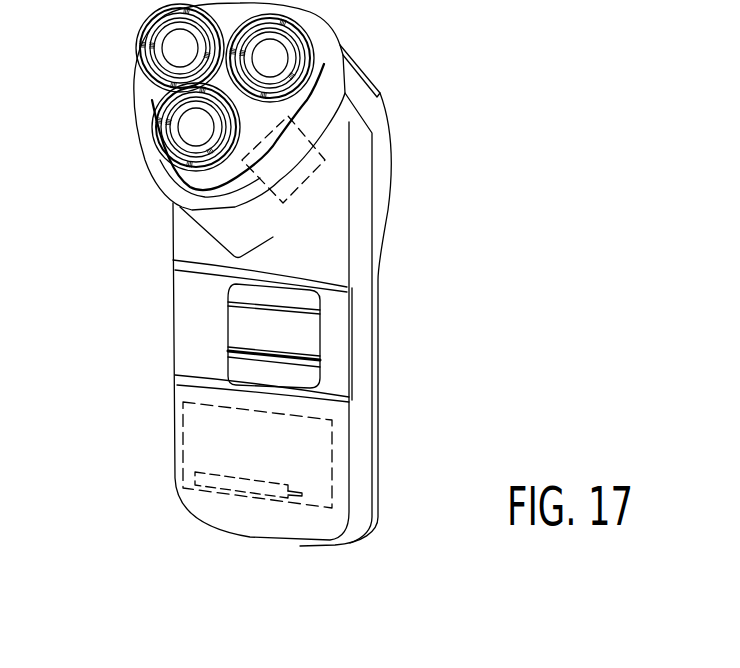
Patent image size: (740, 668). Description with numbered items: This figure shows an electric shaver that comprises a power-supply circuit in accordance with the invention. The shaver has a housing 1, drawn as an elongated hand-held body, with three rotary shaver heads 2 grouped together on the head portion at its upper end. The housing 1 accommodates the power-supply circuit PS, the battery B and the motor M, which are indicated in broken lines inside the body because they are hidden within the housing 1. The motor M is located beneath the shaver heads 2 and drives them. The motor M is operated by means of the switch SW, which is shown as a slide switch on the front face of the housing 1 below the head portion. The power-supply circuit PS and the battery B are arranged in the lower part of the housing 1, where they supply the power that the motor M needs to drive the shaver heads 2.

The housing 1 is at (333, 272).
The shaver heads 2 is at (153, 60).
The motor M is at (309, 173).
The switch SW is at (240, 325).
The power-supply circuit PS is at (333, 455).
The battery B is at (193, 496).